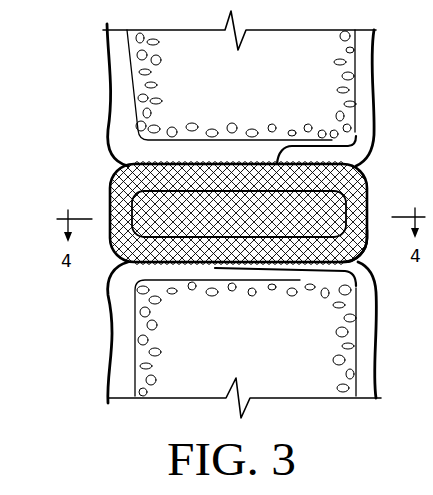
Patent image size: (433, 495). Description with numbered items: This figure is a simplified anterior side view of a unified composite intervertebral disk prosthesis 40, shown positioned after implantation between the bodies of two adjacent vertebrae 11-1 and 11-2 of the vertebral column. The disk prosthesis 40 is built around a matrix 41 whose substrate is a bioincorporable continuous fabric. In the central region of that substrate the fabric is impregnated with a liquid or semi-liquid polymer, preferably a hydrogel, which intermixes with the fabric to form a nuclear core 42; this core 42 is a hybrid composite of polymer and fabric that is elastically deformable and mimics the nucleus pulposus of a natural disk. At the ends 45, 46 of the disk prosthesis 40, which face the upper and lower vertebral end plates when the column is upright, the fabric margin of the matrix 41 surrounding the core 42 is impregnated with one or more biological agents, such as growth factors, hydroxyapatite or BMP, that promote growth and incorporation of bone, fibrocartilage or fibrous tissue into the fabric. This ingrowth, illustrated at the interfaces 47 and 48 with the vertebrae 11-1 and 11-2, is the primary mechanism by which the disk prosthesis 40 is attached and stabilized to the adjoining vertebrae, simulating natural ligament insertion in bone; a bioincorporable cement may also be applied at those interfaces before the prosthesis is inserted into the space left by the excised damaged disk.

The vertebra 11-1 is at (128, 103).
The vertebra 11-2 is at (137, 352).
The disk prosthesis 40 is at (382, 202).
The matrix 41 is at (372, 258).
The nuclear core 42 is at (132, 193).
The end 45 is at (172, 163).
The end 46 is at (183, 264).
The interface 47 is at (276, 163).
The interface 48 is at (285, 264).